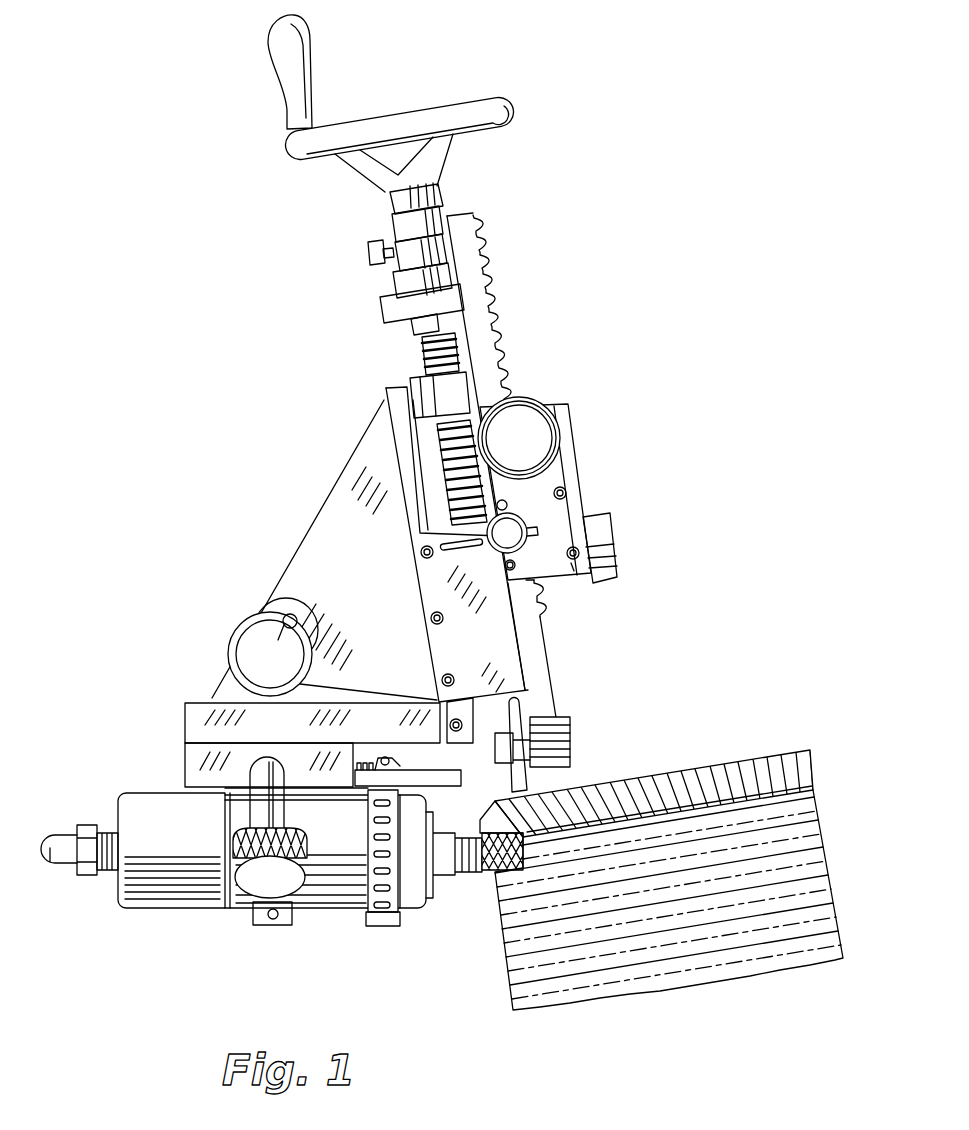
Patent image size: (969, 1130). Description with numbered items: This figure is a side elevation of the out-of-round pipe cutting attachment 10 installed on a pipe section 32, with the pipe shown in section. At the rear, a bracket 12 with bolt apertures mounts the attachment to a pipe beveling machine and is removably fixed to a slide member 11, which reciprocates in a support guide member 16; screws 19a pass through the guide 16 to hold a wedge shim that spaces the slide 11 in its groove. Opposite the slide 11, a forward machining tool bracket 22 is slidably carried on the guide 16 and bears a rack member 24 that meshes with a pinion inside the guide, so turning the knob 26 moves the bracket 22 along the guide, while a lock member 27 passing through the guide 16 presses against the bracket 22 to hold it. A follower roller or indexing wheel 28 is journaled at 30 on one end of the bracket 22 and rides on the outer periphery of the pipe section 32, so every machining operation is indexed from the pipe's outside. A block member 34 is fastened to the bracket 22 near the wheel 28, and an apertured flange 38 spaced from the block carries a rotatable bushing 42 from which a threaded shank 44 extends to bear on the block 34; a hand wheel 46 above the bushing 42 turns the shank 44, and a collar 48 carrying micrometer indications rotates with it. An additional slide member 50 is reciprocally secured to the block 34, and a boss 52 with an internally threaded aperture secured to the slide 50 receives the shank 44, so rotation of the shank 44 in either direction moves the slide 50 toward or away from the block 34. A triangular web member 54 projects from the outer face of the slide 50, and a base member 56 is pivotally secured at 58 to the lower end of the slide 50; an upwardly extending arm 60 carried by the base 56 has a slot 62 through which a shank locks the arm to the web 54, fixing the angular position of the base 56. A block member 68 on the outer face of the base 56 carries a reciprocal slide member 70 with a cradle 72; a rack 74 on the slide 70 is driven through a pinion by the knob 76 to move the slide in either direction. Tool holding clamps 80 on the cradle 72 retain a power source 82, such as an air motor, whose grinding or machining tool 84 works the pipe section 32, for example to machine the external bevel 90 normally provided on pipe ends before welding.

The out-of-round attachment 10 is at (378, 413).
The slide member 11 is at (555, 484).
The rear bracket 12 is at (600, 531).
The support guide member 16 is at (572, 473).
The screws 19a is at (572, 565).
The forward machining tool bracket 22 is at (502, 471).
The rack member 24 is at (485, 278).
The knob 26 is at (520, 420).
The lock member 27 is at (515, 527).
The follower roller or indexing wheel 28 is at (548, 784).
The journal 30 is at (555, 737).
The pipe section 32 is at (714, 773).
The block member 34 is at (510, 651).
The apertured flange 38 is at (396, 308).
The bushing 42 is at (420, 330).
The threaded shank 44 is at (447, 471).
The hand wheel 46 is at (483, 103).
The collar 48 is at (396, 284).
The additional slide member 50 is at (398, 430).
The boss 52 is at (458, 393).
The triangular web member 54 is at (326, 537).
The base member 56 is at (196, 712).
The pivot 58 is at (458, 742).
The upwardly extending arm 60 is at (288, 603).
The slot 62 is at (300, 640).
The block member 68 is at (196, 764).
The reciprocal slide member 70 is at (440, 782).
The cradle 72 is at (352, 798).
The rack member 74 is at (395, 762).
The knob 76 is at (242, 838).
The tool holding clamps 80 is at (283, 916).
The power source 82 is at (168, 898).
The machine tool 84 is at (495, 871).
The external bevel 90 is at (518, 830).